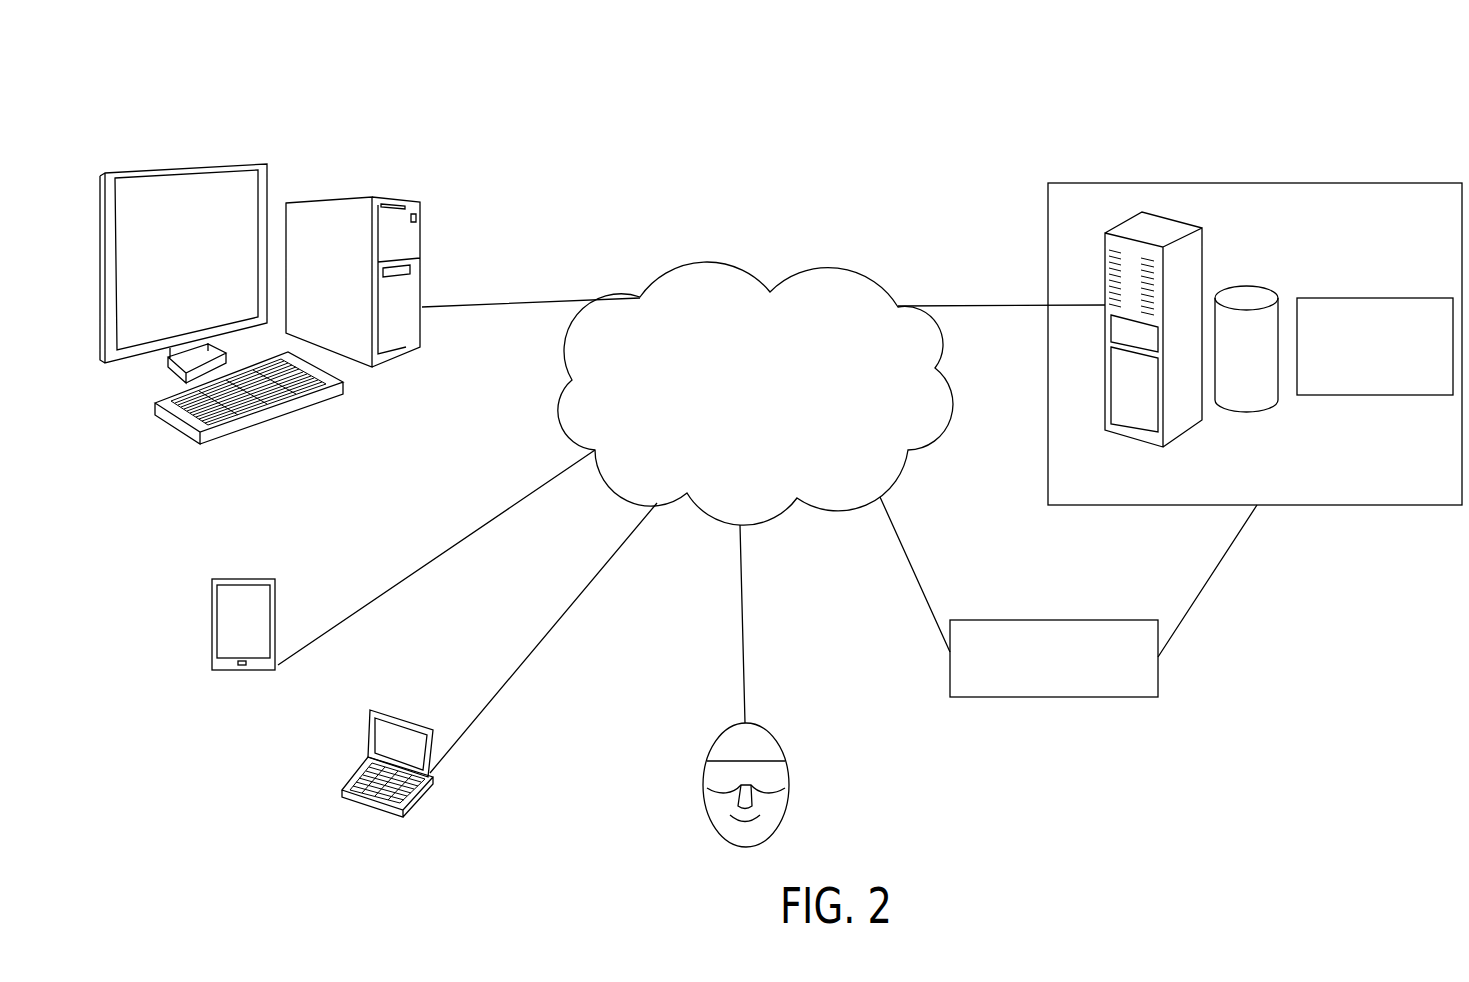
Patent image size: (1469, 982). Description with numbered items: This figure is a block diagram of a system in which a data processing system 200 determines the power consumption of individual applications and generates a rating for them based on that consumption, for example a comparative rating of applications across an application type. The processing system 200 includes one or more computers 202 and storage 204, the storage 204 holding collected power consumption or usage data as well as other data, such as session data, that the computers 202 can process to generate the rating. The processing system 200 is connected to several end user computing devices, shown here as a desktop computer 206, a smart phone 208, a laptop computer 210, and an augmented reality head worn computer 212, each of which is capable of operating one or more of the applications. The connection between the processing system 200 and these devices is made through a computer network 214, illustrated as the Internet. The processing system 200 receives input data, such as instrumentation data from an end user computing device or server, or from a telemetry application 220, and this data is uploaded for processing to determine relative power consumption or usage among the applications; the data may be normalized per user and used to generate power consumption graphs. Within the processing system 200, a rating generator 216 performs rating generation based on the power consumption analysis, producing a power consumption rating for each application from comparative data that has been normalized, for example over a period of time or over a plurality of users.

The processing system 200 is at (1215, 111).
The computers 202 is at (1180, 230).
The storage 204 is at (1242, 293).
The desktop computer 206 is at (183, 109).
The smart phone 208 is at (253, 578).
The laptop computer 210 is at (409, 720).
The augmented reality head worn computer 212 is at (768, 732).
The computer network 214 is at (775, 165).
The rating generator 216 is at (1353, 397).
The telemetry application 220 is at (1053, 697).